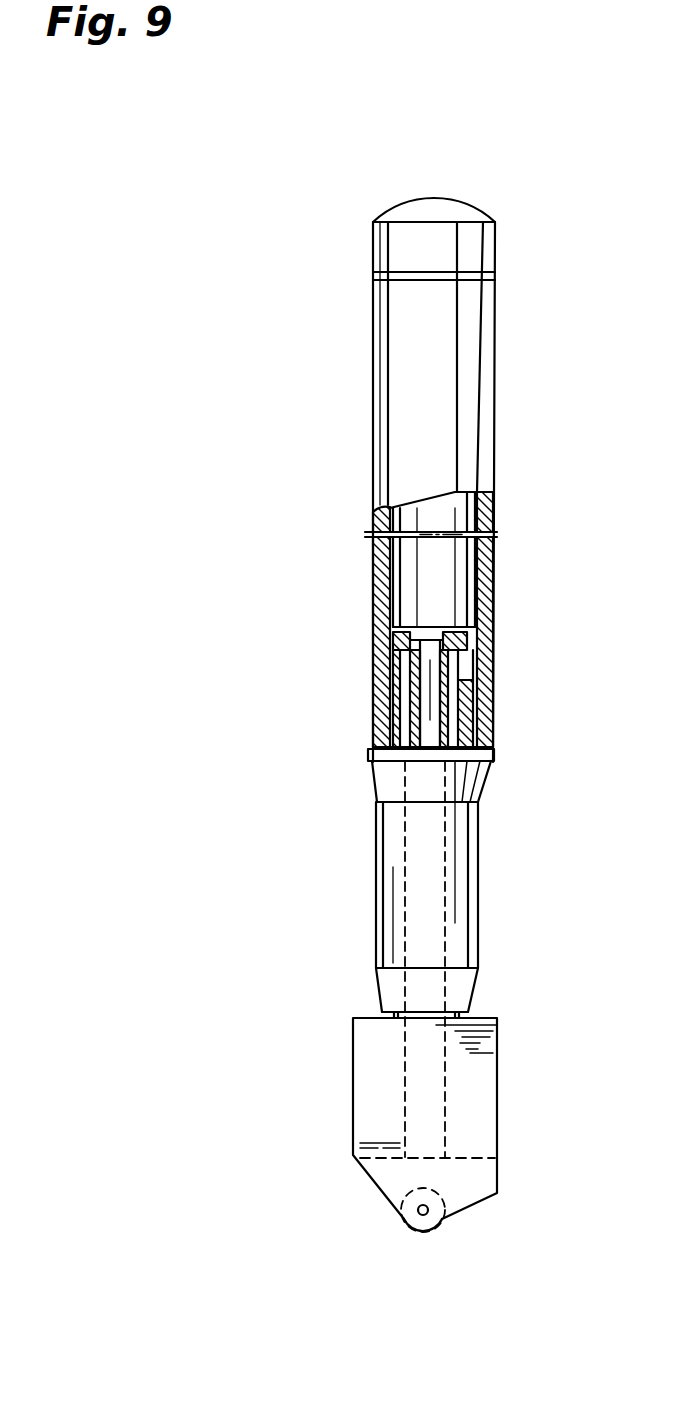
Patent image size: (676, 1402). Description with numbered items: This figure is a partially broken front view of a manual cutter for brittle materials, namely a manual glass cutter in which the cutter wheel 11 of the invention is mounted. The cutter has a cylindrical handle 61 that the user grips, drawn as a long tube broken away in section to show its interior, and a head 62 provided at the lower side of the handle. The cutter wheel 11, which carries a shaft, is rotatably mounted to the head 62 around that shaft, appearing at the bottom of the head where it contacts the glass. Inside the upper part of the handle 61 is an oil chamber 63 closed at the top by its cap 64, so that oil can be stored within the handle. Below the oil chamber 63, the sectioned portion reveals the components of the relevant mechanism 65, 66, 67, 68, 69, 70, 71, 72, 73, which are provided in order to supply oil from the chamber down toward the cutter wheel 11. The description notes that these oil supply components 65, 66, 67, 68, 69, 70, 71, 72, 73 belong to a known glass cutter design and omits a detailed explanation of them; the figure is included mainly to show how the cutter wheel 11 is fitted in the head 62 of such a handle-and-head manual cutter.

The cutter wheel 11 is at (400, 1220).
The cylindrical handle 61 is at (378, 517).
The head 62 is at (377, 1125).
The oil chamber 63 is at (402, 551).
The cap 64 is at (388, 249).
The oil supply mechanism component 65 is at (390, 620).
The oil supply mechanism component 66 is at (395, 641).
The oil supply mechanism component 67 is at (412, 657).
The oil supply mechanism component 68 is at (415, 690).
The oil supply mechanism component 69 is at (390, 723).
The oil supply mechanism component 70 is at (468, 635).
The oil supply mechanism component 71 is at (445, 659).
The oil supply mechanism component 72 is at (450, 677).
The oil supply mechanism component 73 is at (453, 720).